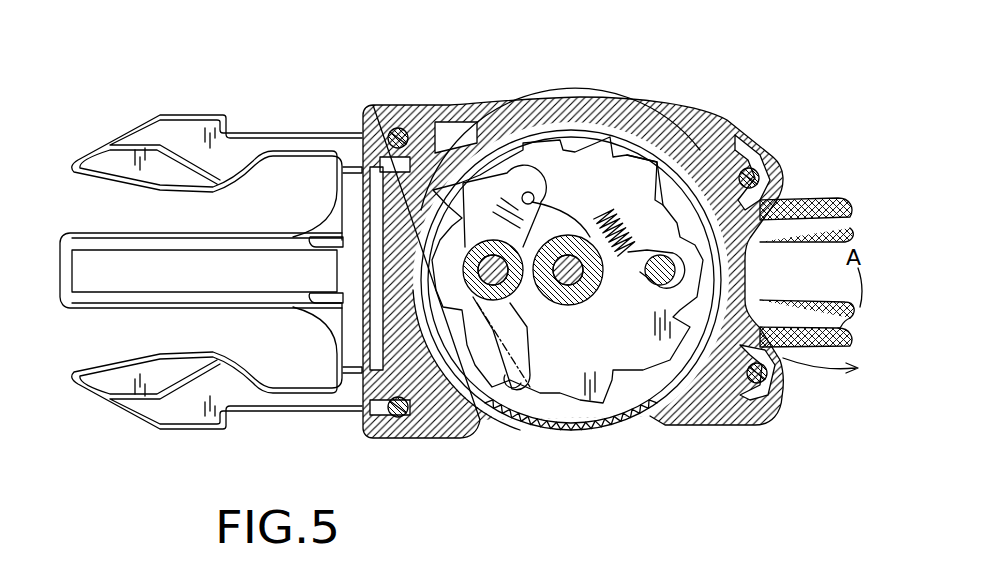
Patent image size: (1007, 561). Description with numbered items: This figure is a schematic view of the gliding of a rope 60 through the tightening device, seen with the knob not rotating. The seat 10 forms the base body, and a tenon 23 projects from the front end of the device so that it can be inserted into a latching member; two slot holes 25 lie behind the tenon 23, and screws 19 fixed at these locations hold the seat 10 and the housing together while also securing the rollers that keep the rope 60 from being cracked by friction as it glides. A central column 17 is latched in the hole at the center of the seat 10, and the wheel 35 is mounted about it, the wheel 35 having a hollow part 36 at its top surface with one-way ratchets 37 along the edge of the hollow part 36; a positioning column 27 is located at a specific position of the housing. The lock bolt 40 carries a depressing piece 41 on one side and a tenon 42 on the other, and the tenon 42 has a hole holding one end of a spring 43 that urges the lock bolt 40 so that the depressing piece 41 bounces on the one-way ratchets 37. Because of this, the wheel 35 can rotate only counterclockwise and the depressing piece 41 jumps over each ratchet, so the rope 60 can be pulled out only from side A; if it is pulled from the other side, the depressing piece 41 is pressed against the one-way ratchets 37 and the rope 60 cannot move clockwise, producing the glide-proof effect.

The seat 10 is at (527, 100).
The central column 17 is at (556, 240).
The screws 19 is at (392, 130).
The tenon 23 is at (178, 135).
The slot holes 25 is at (432, 215).
The positioning column 27 is at (678, 270).
The wheel 35 is at (612, 195).
The hollow part 36 is at (560, 140).
The one-way ratchets 37 is at (728, 122).
The lock bolt 40 is at (465, 205).
The depressing piece 41 is at (505, 330).
The tenon 42 is at (532, 215).
The spring 43 is at (640, 147).
The rope 60 is at (812, 200).